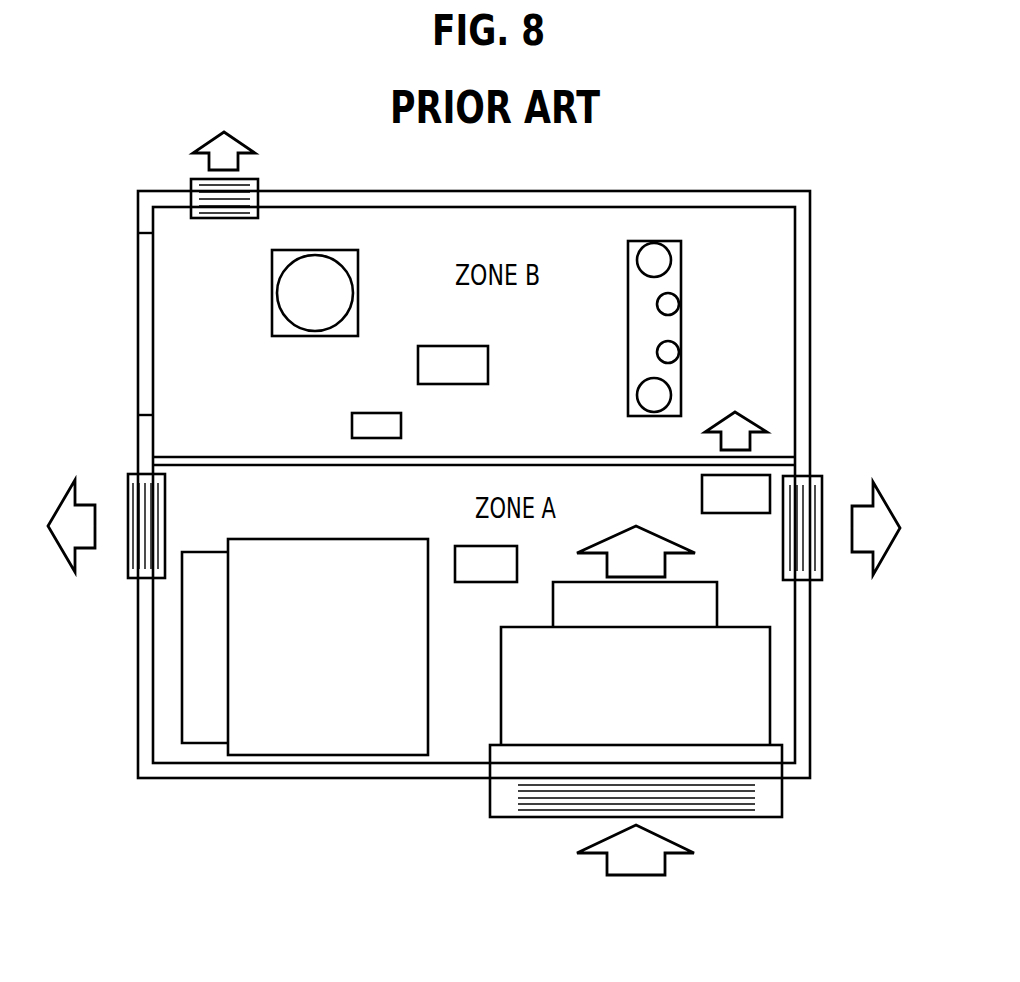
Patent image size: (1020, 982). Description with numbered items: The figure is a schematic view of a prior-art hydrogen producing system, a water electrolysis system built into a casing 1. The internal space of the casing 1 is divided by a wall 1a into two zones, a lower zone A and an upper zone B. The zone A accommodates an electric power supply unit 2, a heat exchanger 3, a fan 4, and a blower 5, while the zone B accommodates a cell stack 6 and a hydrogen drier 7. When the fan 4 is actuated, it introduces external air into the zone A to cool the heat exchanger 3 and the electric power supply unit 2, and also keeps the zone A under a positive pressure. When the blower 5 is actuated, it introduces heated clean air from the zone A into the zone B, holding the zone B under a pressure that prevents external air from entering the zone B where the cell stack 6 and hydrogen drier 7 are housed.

The casing 1 is at (820, 207).
The wall 1a is at (530, 457).
The electric power supply unit 2 is at (284, 548).
The heat exchanger 3 is at (737, 638).
The fan 4 is at (700, 590).
The blower 5 is at (710, 493).
The cell stack 6 is at (282, 331).
The hydrogen drier 7 is at (677, 253).